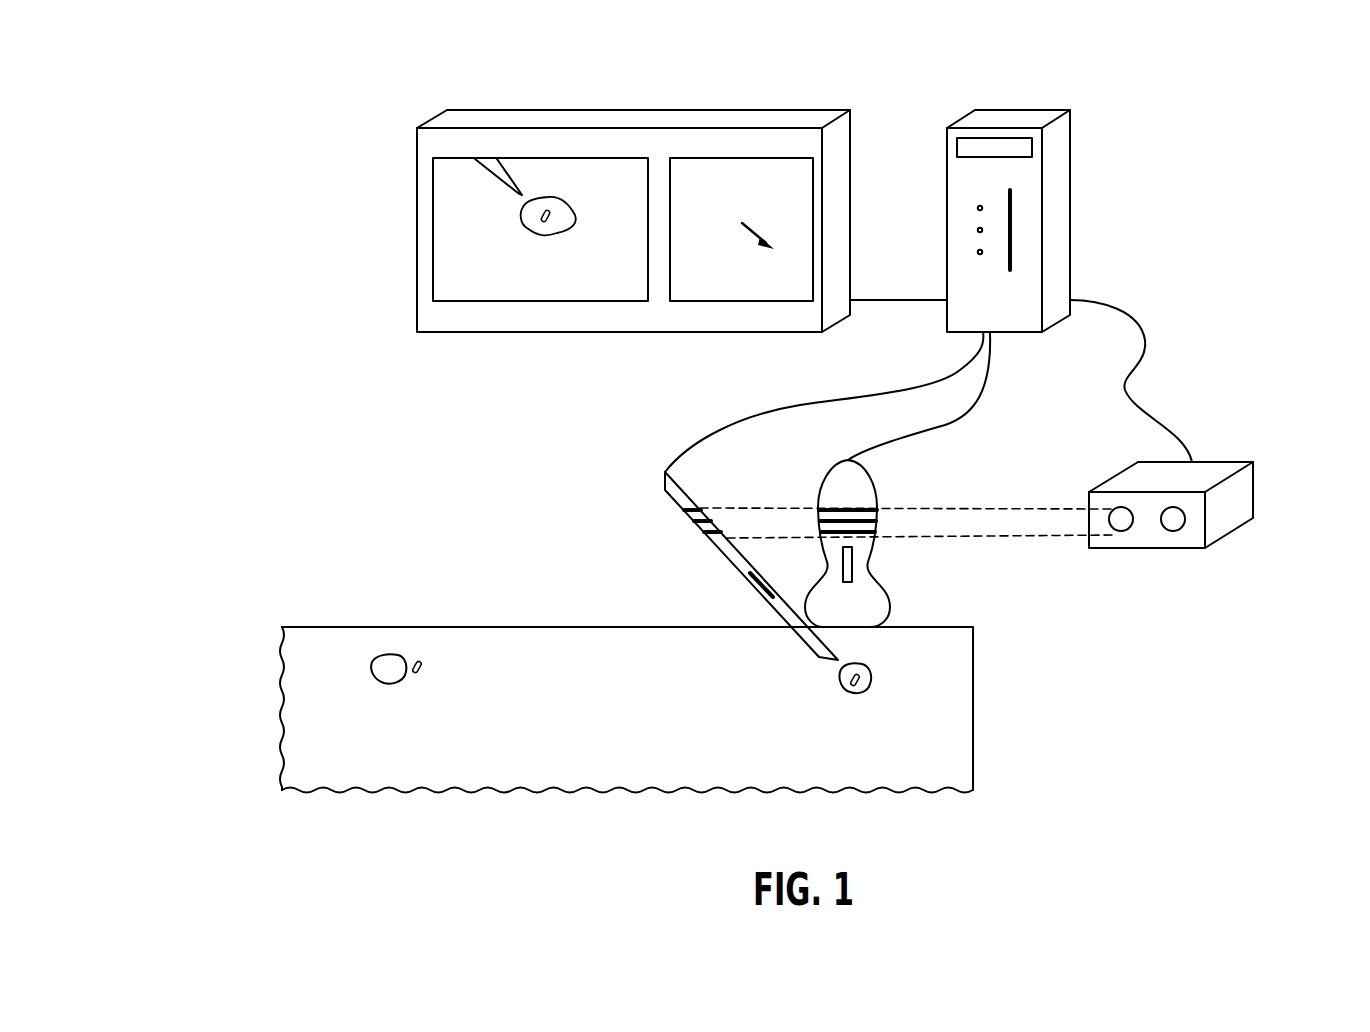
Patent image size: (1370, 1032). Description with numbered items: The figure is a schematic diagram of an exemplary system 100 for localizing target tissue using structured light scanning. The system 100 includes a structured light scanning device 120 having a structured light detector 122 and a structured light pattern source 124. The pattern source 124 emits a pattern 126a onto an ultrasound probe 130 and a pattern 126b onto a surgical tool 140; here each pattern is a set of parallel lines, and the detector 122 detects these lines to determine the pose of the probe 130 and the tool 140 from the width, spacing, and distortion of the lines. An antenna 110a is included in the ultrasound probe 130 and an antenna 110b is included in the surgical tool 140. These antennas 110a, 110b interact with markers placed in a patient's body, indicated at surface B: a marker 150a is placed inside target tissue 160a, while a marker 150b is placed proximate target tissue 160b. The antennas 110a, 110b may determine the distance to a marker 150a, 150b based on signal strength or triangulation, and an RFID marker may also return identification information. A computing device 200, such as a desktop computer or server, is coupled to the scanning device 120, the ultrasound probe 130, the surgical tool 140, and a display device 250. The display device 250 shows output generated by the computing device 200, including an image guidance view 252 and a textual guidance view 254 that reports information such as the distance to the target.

The system 100 is at (323, 78).
The display device 250 is at (740, 110).
The image guidance view 252 is at (493, 301).
The textual guidance view 254 is at (710, 301).
The computing device 200 is at (1040, 110).
The structured light scanning device 120 is at (1230, 462).
The structured light detector 122 is at (1173, 531).
The structured light pattern source 124 is at (1118, 531).
The ultrasound probe 130 is at (889, 598).
The pattern 126a is at (878, 508).
The pattern 126b is at (681, 507).
The antenna 110a is at (852, 562).
The antenna 110b is at (750, 587).
The surgical tool 140 is at (714, 550).
The body surface B is at (973, 626).
The target tissue 160a is at (872, 672).
The target tissue 160b is at (371, 670).
The marker 150a is at (849, 693).
The marker 150b is at (417, 660).